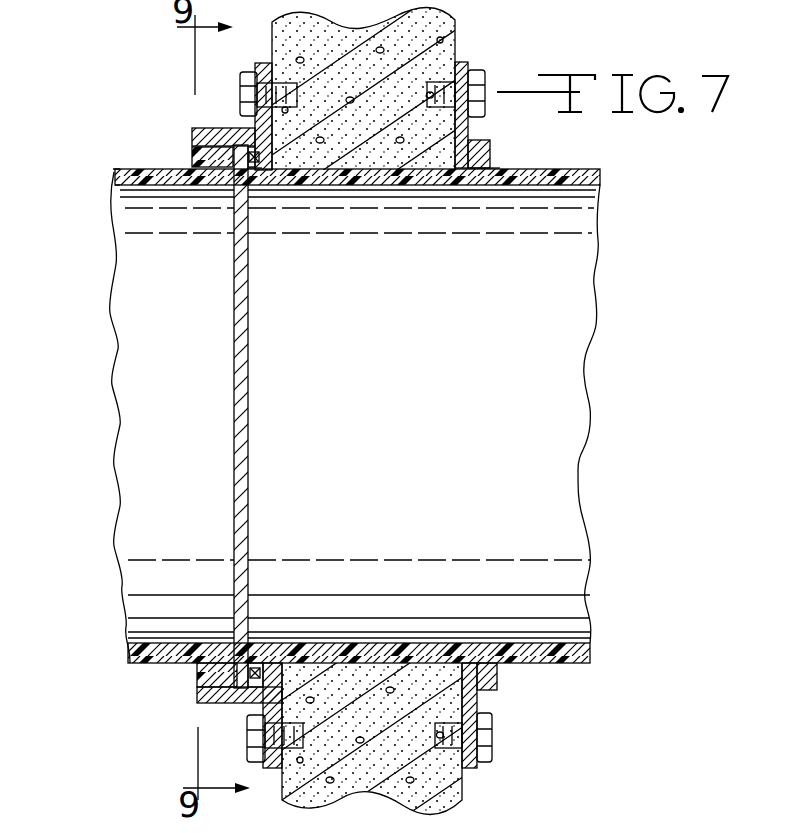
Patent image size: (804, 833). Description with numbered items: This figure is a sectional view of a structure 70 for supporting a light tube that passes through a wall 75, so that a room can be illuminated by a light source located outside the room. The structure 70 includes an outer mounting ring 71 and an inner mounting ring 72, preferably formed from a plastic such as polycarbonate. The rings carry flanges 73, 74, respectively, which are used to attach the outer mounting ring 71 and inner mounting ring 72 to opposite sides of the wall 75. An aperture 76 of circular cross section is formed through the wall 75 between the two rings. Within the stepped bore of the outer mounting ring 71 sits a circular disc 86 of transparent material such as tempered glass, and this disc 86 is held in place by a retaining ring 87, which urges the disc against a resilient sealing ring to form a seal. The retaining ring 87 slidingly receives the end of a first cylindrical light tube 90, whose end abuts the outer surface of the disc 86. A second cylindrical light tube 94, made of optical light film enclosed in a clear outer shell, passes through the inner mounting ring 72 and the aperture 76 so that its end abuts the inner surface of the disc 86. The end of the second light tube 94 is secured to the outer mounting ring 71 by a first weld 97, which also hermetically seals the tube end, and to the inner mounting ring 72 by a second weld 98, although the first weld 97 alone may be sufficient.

The structure for supporting a light tube 70 is at (105, 82).
The outer mounting ring 71 is at (232, 130).
The inner mounting ring 72 is at (472, 142).
The flange 73 is at (258, 63).
The flange 74 is at (466, 62).
The wall 75 is at (456, 24).
The aperture 76 is at (602, 335).
The circular disc 86 is at (250, 478).
The retaining ring 87 is at (190, 160).
The first cylindrical light tube 90 is at (152, 430).
The second cylindrical light tube 94 is at (557, 507).
The first weld 97 is at (266, 172).
The second weld 98 is at (493, 167).